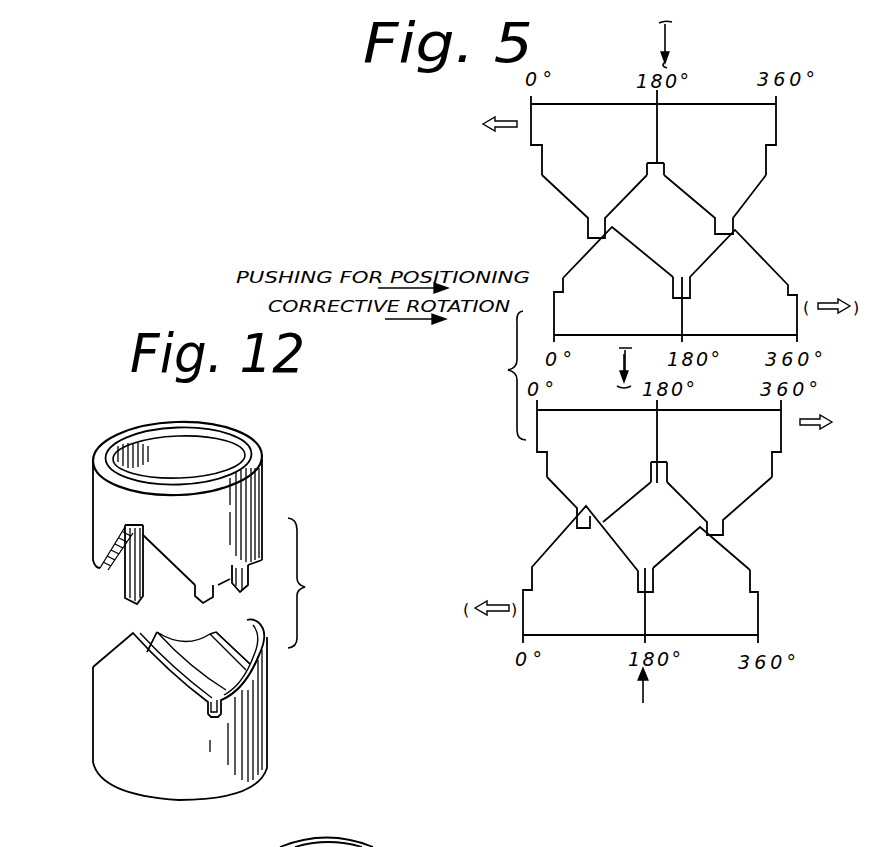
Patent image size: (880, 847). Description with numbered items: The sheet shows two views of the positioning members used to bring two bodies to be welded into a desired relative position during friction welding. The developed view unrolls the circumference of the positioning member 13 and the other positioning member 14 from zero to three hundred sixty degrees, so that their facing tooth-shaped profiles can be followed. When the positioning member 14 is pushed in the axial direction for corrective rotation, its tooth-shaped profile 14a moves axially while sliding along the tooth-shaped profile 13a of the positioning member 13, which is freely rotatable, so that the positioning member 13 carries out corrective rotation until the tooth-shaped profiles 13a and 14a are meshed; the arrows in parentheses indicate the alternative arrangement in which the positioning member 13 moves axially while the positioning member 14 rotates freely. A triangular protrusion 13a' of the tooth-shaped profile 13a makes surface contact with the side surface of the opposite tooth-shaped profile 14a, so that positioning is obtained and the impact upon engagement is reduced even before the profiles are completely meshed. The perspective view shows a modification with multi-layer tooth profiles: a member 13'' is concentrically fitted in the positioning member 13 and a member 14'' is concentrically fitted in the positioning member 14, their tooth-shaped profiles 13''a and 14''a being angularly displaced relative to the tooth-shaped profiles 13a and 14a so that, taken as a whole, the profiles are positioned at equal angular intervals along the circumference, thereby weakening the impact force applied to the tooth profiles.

In FIG. 5, the positioning member 13 is at (671, 286).
In FIG. 12, the positioning member 13 is at (204, 502).
In FIG. 5, the tooth-shaped profile 13a is at (669, 355).
In FIG. 12, the tooth-shaped profile 13a is at (249, 588).
In FIG. 5, the triangular protrusion 13a' is at (652, 357).
In FIG. 12, the member concentrically fitted in positioning member 13 13'' is at (101, 564).
In FIG. 12, the tooth-shaped profile 13''a is at (183, 602).
In FIG. 5, the positioning member 14 is at (667, 436).
In FIG. 12, the positioning member 14 is at (204, 709).
In FIG. 5, the tooth-shaped profile 14a is at (696, 244).
In FIG. 12, the tooth-shaped profile 14a is at (331, 670).
In FIG. 12, the member concentrically fitted in positioning member 14 14'' is at (266, 668).
In FIG. 12, the tooth-shaped profile 14''a is at (143, 669).